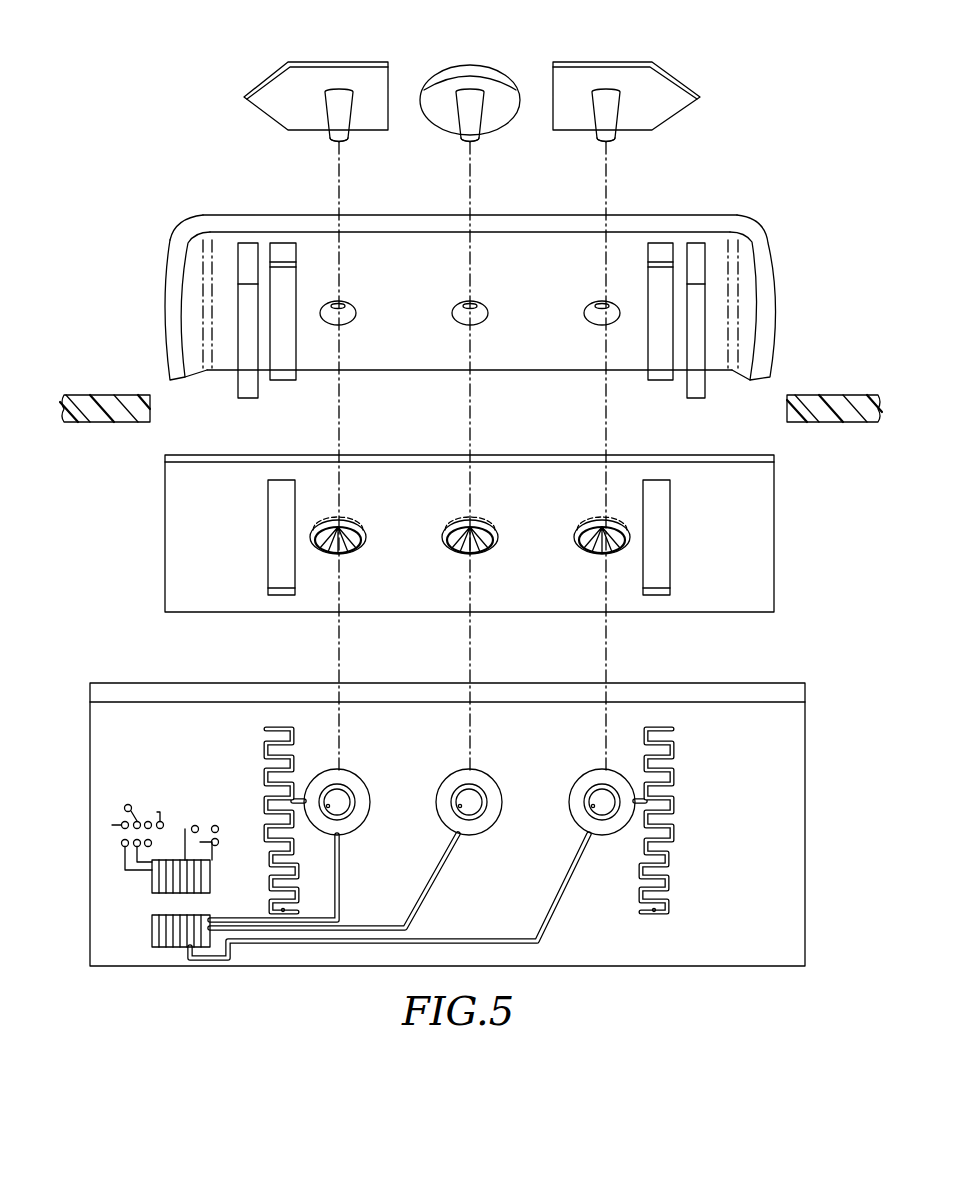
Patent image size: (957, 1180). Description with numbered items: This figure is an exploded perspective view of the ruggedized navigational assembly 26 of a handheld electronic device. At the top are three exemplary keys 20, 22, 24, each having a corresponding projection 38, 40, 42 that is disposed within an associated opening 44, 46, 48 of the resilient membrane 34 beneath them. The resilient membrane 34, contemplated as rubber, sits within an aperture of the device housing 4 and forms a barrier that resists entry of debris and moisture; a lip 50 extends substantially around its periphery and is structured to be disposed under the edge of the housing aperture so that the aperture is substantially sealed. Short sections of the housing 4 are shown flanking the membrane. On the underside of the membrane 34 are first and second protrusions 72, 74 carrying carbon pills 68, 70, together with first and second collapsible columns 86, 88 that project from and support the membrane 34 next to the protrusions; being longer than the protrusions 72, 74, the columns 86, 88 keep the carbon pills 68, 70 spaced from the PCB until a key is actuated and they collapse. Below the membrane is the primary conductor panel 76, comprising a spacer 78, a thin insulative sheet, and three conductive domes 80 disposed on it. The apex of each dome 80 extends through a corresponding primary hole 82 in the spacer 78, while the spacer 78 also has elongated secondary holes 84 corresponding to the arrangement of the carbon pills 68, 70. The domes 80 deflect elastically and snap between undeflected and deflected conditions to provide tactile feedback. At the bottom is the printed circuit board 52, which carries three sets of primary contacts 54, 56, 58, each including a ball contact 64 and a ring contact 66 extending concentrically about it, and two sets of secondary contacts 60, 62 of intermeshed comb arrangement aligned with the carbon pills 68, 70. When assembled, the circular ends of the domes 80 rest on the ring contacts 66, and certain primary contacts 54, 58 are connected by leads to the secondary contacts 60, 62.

The housing 4 is at (98, 393).
The key 20 is at (316, 76).
The key 22 is at (465, 83).
The key 24 is at (626, 77).
The navigational assembly 26 is at (447, 800).
The resilient membrane 34 is at (455, 269).
The projection 38 is at (332, 107).
The projection 40 is at (462, 115).
The projection 42 is at (603, 100).
The opening 44 is at (345, 315).
The opening 46 is at (477, 315).
The opening 48 is at (585, 312).
The lip 50 is at (178, 237).
The printed circuit board 52 is at (122, 937).
The set of primary contacts 54 is at (465, 803).
The set of primary contacts 56 is at (480, 770).
The set of primary contacts 58 is at (590, 770).
The set of secondary contacts 60 is at (265, 758).
The set of secondary contacts 62 is at (673, 762).
The ball contact 64 is at (342, 808).
The ring contact 66 is at (355, 797).
The carbon pill 68 is at (298, 264).
The carbon pill 70 is at (648, 264).
The first protrusion 72 is at (294, 276).
The second protrusion 74 is at (639, 277).
The primary conductor panel 76 is at (482, 533).
The spacer 78 is at (172, 515).
The conductive dome 80 is at (473, 533).
The primary hole 82 is at (352, 548).
The elongated secondary hole 84 is at (275, 525).
The first collapsible column 86 is at (243, 258).
The second collapsible column 88 is at (698, 347).